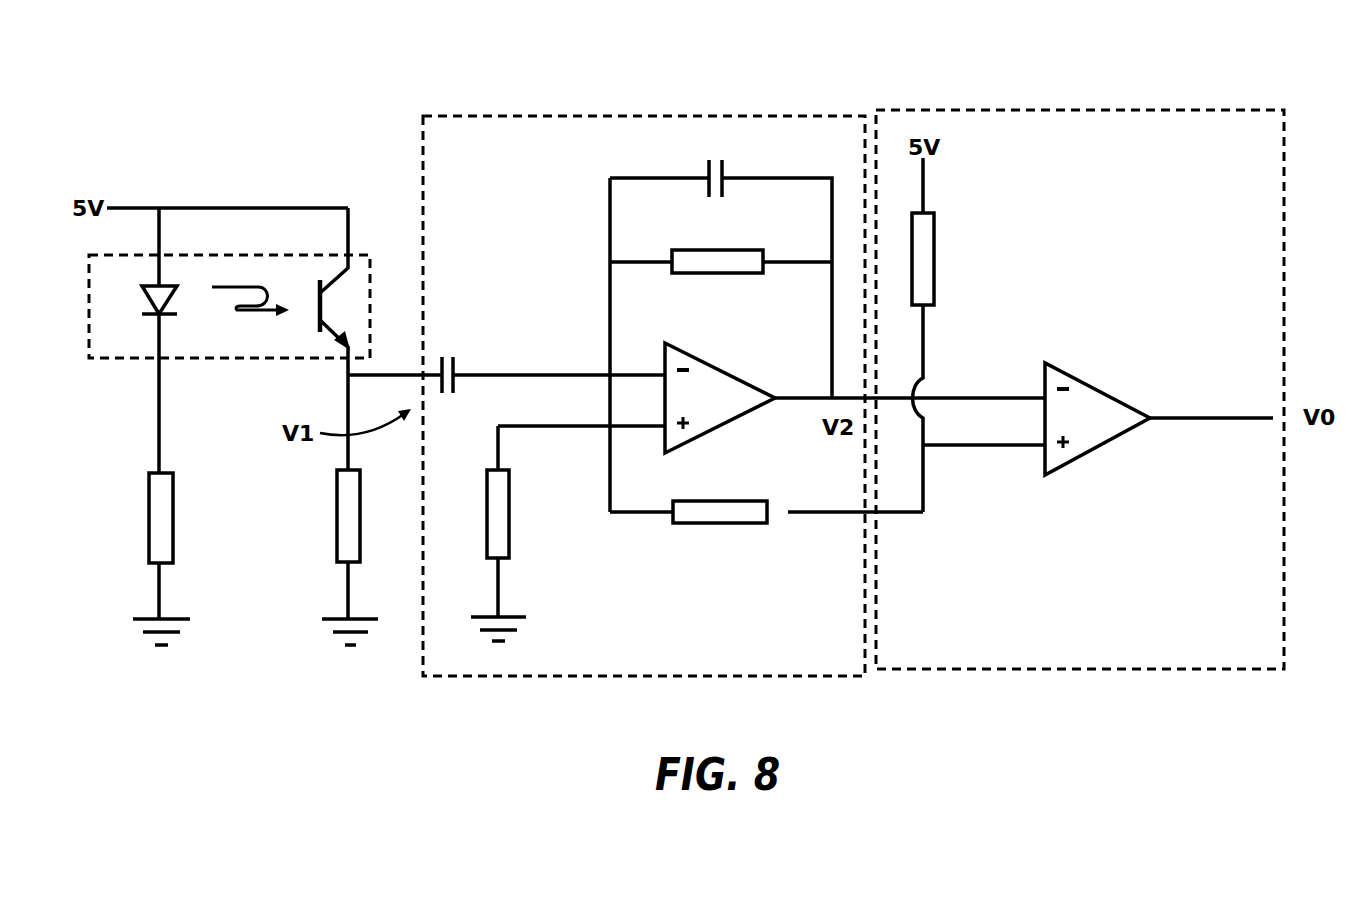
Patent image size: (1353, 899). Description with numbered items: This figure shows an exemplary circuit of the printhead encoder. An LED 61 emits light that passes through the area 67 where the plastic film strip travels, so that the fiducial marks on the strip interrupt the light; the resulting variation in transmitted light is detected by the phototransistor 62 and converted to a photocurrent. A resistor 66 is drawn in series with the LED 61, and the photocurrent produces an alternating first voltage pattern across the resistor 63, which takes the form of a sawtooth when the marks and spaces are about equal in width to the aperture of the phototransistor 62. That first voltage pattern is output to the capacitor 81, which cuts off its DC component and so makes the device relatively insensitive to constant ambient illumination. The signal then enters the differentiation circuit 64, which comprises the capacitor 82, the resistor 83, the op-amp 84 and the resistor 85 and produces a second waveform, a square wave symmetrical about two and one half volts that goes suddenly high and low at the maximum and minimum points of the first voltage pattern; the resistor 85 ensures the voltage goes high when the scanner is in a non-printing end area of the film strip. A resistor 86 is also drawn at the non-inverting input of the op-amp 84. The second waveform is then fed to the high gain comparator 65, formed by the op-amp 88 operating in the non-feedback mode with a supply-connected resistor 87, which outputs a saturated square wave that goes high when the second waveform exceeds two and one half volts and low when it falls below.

The LED 61 is at (148, 298).
The phototransistor 62 is at (332, 307).
The resistor 63 is at (337, 515).
The differentiation circuit 64 is at (642, 114).
The high gain comparator 65 is at (1080, 108).
The resistor 66 is at (148, 518).
The area 67 is at (262, 230).
The capacitor 81 is at (455, 352).
The capacitor 82 is at (722, 158).
The resistor 83 is at (715, 250).
The op-amp 84 is at (715, 385).
The resistor 85 is at (720, 523).
The resistor 86 is at (486, 515).
The resistor 87 is at (935, 259).
The op-amp 88 is at (1094, 408).